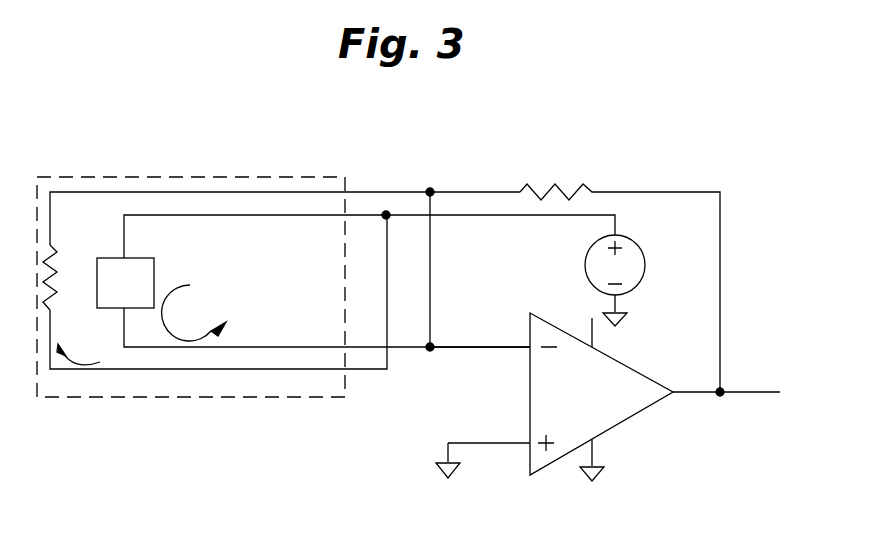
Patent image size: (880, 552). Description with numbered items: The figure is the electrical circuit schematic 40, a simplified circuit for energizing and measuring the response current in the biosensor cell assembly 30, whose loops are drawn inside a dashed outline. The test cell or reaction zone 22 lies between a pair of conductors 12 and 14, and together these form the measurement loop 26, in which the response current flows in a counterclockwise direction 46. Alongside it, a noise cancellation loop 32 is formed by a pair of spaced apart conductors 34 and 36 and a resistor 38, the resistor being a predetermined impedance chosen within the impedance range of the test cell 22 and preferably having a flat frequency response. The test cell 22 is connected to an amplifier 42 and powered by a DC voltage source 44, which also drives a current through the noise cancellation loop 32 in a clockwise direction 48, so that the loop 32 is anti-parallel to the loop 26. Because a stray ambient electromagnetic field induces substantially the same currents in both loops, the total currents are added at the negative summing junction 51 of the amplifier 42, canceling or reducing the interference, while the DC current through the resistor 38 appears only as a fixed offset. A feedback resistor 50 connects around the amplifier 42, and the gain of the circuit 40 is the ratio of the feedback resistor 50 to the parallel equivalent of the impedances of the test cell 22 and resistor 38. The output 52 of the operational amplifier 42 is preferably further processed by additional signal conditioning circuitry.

The conductor 12 is at (316, 216).
The conductor 14 is at (268, 347).
The test cell 22 is at (136, 296).
The measurement loop 26 is at (214, 264).
The biosensor cell assembly 30 is at (292, 176).
The noise cancellation loop 32 is at (104, 237).
The conductor 34 is at (217, 192).
The conductor 36 is at (305, 369).
The resistor 38 is at (53, 303).
The electrical circuit schematic 40 is at (493, 165).
The amplifier 42 is at (645, 420).
The DC voltage source 44 is at (636, 240).
The counterclockwise direction 46 is at (194, 313).
The clockwise direction 48 is at (96, 352).
The feedback resistor 50 is at (590, 192).
The negative summing junction 51 is at (526, 348).
The output 52 is at (758, 394).